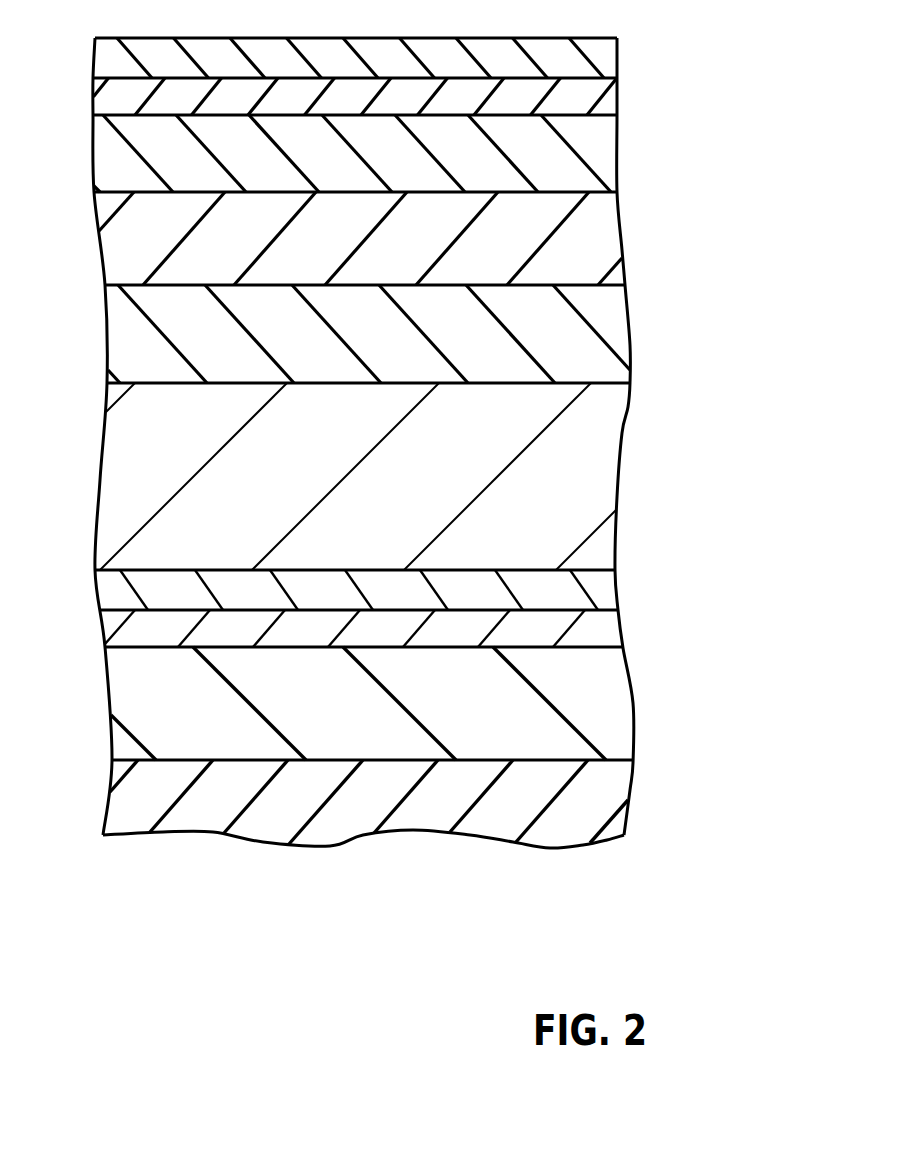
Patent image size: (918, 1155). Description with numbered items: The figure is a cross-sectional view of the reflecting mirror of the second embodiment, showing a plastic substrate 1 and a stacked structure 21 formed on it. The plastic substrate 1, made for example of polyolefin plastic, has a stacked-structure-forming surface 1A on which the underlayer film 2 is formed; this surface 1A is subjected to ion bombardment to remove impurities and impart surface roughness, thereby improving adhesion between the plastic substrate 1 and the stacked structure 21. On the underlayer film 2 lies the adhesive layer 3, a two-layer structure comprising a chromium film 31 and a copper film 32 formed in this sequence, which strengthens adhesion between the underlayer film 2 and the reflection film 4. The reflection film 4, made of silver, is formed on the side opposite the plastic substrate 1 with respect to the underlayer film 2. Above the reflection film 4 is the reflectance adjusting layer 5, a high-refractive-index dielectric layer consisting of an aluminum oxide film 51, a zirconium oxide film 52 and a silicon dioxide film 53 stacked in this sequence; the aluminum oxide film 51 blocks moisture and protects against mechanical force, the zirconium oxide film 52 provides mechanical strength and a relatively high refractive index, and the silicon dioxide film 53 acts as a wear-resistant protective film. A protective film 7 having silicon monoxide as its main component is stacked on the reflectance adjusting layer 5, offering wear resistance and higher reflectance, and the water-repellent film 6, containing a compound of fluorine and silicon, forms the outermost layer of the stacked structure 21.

The water-repellent film 6 is at (598, 59).
The protective film 7 is at (587, 100).
The silicon dioxide film 53 is at (584, 158).
The zirconium oxide film 52 is at (588, 250).
The aluminum oxide film 51 is at (401, 334).
The reflectance adjusting layer 5 is at (425, 249).
The reflection film 4 is at (590, 497).
The copper film 32 is at (588, 590).
The chromium film 31 is at (588, 635).
The adhesive layer 3 is at (426, 612).
The underlayer film 2 is at (588, 705).
The plastic substrate 1 is at (605, 788).
The stacked-structure-forming surface 1A is at (137, 756).
The stacked structure 21 is at (441, 443).